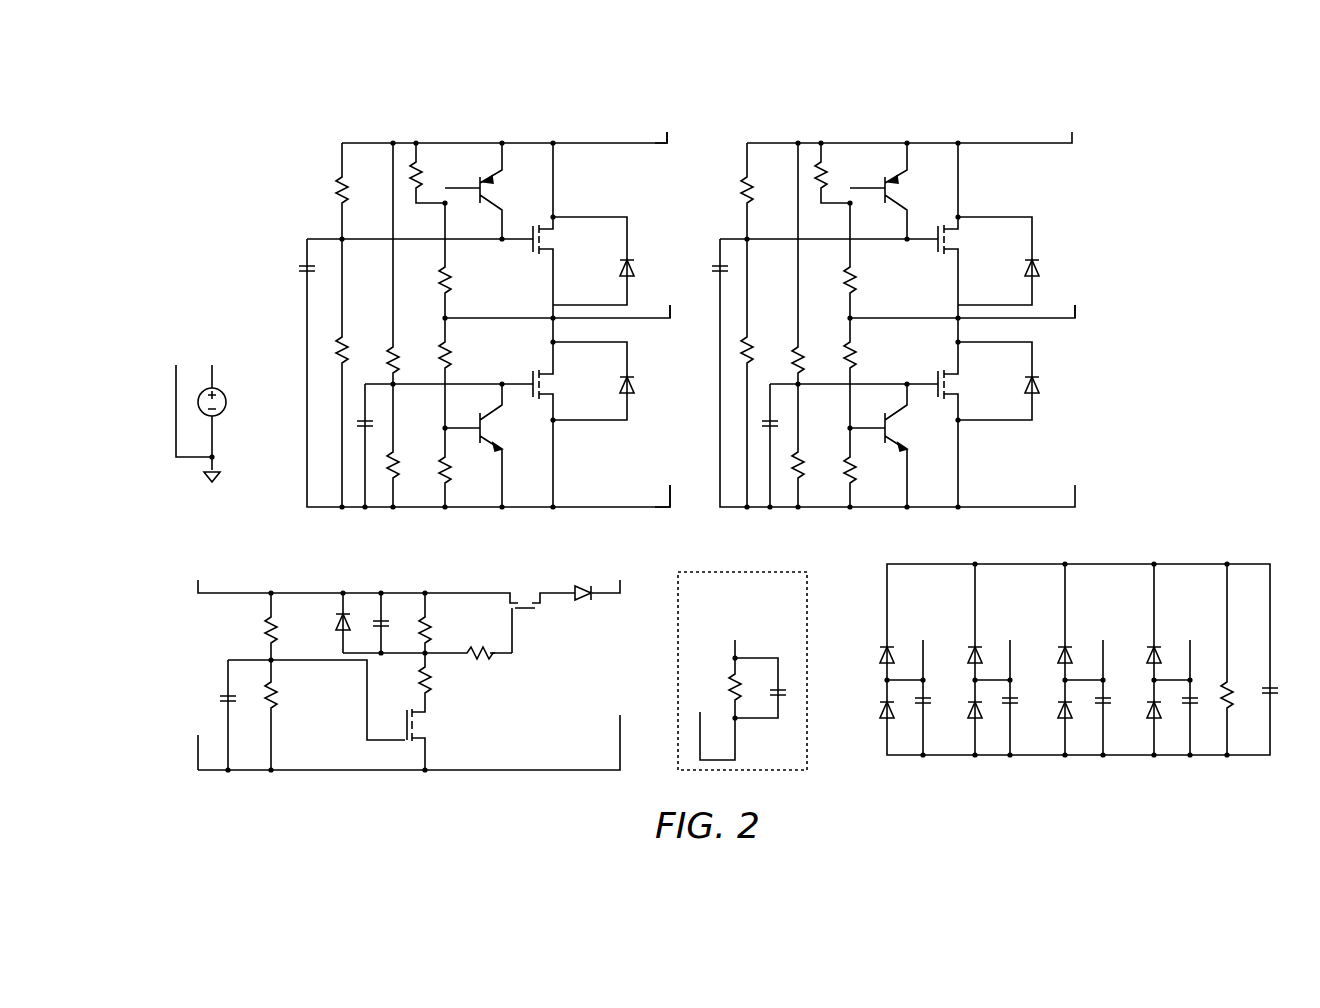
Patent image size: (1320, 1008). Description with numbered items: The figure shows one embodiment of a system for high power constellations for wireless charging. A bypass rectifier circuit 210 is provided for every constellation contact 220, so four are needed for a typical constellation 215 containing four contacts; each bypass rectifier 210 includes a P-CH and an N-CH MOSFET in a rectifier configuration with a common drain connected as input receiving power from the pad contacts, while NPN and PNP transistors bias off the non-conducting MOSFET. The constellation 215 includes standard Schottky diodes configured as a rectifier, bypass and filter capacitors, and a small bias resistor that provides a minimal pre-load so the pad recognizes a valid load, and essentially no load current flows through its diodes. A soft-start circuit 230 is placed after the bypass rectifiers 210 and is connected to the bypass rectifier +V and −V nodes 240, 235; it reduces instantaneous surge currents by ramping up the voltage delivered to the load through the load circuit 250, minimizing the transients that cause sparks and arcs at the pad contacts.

The bypass rectifier circuit 210 is at (307, 239).
The constellation 215 is at (1210, 562).
The constellation contact 220 is at (670, 255).
The soft-start circuit 230 is at (271, 660).
The −V node 235 is at (667, 475).
The +V node 240 is at (665, 140).
The load circuit 250 is at (680, 762).